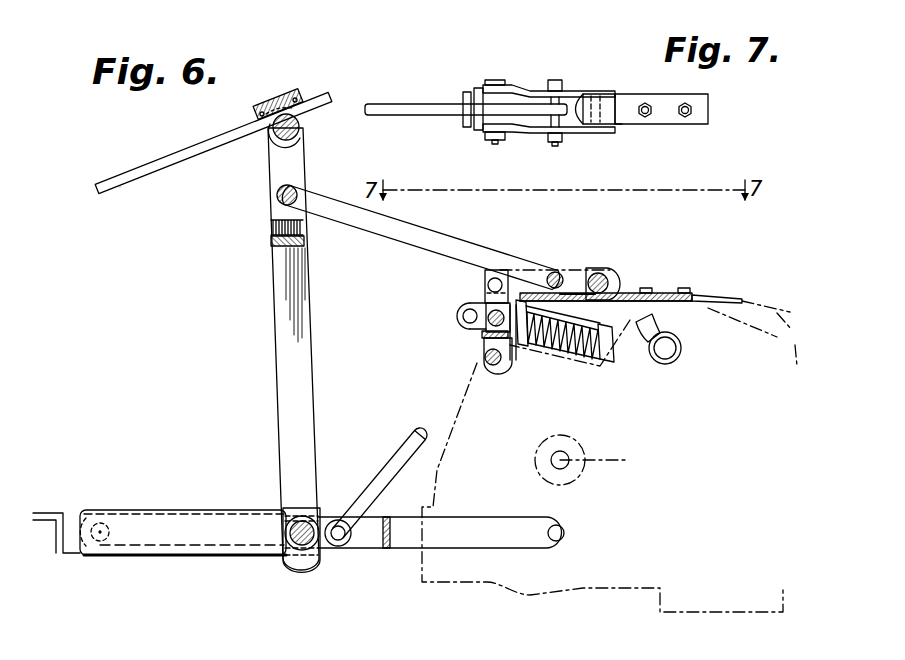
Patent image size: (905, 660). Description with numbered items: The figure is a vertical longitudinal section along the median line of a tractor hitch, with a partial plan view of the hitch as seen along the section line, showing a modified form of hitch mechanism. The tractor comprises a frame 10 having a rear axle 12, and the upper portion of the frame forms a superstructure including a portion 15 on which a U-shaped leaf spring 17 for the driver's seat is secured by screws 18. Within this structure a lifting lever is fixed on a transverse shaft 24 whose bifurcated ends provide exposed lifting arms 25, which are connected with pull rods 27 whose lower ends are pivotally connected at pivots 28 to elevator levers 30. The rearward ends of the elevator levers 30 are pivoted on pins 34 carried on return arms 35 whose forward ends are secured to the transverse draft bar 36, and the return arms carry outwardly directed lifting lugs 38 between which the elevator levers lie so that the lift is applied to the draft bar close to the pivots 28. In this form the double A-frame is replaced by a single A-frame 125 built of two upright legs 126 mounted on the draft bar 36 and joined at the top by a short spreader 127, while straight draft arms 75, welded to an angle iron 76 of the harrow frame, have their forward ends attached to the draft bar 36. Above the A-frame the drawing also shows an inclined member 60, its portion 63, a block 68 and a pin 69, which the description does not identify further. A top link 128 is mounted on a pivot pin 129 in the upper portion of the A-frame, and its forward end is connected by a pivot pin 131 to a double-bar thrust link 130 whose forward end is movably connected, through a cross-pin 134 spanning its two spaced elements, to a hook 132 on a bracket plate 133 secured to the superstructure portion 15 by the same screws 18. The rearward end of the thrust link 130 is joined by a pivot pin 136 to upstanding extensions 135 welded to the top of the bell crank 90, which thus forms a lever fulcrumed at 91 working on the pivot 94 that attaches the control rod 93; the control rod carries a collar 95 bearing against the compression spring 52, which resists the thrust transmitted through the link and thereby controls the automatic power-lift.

In FIG. 6, the frame 10 is at (720, 612).
In FIG. 6, the rear axle 12 is at (598, 460).
In FIG. 6, the superstructure portion 15 is at (788, 340).
In FIG. 6, the U-shaped leaf spring 17 is at (774, 310).
In FIG. 6, the screws 18 is at (700, 293).
In FIG. 7, the screws 18 is at (698, 110).
In FIG. 6, the transverse shaft 24 is at (683, 356).
In FIG. 6, the lifting arms 25 is at (666, 324).
In FIG. 6, the pull rods 27 is at (402, 441).
In FIG. 6, the pivot 28 is at (348, 545).
In FIG. 6, the elevator levers 30 is at (141, 510).
In FIG. 6, the pins 34 is at (99, 520).
In FIG. 6, the return arms 35 is at (211, 514).
In FIG. 6, the transverse draft bar 36 is at (329, 511).
In FIG. 6, the lifting lugs 38 is at (276, 502).
In FIG. 6, the compression spring 52 is at (580, 356).
In FIG. 6, the rod 60 is at (136, 160).
In FIG. 6, the rod portion 63 is at (200, 150).
In FIG. 6, the clamp block 68 is at (283, 92).
In FIG. 6, the pivot pin 69 is at (300, 127).
In FIG. 6, the draft arms 75 is at (173, 548).
In FIG. 6, the angle iron 76 is at (56, 524).
In FIG. 6, the bell crank 90 is at (480, 340).
In FIG. 6, the fulcrum 91 is at (492, 372).
In FIG. 6, the control rod 93 is at (506, 345).
In FIG. 6, the pivot pin 94 is at (468, 324).
In FIG. 6, the collar 95 is at (532, 306).
In FIG. 6, the A-frame 125 is at (264, 355).
In FIG. 6, the upright legs 126 is at (272, 213).
In FIG. 6, the spreader 127 is at (285, 247).
In FIG. 6, the top link 128 is at (408, 246).
In FIG. 7, the top link 128 is at (436, 116).
In FIG. 6, the pivot pin 129 is at (277, 193).
In FIG. 6, the thrust link 130 is at (582, 270).
In FIG. 7, the thrust link 130 is at (586, 92).
In FIG. 6, the pivot pin 131 is at (551, 270).
In FIG. 7, the pivot pin 131 is at (555, 128).
In FIG. 6, the hook 132 is at (610, 275).
In FIG. 6, the bracket plate 133 is at (668, 292).
In FIG. 7, the bracket plate 133 is at (680, 125).
In FIG. 6, the cross-pin 134 is at (622, 292).
In FIG. 7, the cross-pin 134 is at (620, 118).
In FIG. 6, the upstanding extensions 135 is at (484, 292).
In FIG. 7, the upstanding extensions 135 is at (472, 92).
In FIG. 6, the pivot pin 136 is at (490, 270).
In FIG. 7, the pivot pin 136 is at (498, 80).